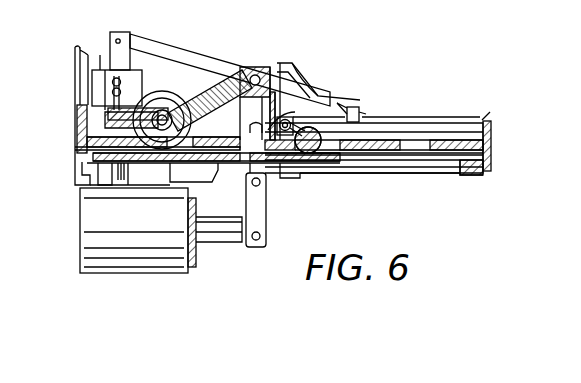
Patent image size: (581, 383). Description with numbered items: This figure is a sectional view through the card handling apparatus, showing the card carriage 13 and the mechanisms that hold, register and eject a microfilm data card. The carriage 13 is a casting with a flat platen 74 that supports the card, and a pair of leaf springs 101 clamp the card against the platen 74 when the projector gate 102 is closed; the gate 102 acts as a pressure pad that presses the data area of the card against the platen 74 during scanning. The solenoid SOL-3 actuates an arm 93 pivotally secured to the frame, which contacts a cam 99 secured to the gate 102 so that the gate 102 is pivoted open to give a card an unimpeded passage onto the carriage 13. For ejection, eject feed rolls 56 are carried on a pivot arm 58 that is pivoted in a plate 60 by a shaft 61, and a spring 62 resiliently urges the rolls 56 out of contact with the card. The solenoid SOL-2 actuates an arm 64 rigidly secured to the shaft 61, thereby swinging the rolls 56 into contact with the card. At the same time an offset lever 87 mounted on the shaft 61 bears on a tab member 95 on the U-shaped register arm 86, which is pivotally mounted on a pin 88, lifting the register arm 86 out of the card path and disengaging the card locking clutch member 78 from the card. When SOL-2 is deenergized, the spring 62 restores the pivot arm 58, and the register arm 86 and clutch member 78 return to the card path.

The solenoid SOL-2 is at (100, 55).
The solenoid SOL-3 is at (131, 273).
The spring 62 is at (88, 83).
The arm 64 is at (166, 32).
The shaft 61 is at (250, 67).
The plate 60 is at (286, 46).
The offset lever 87 is at (312, 50).
The pin 88 is at (318, 102).
The tab member 95 is at (356, 106).
The card locking clutch member 78 is at (366, 118).
The platen 74 is at (443, 142).
The card carriage 13 is at (490, 116).
The register arm 86 is at (491, 130).
The projector gate 102 is at (470, 176).
The leaf springs 101 is at (353, 177).
The cam 99 is at (308, 178).
The arm 93 is at (270, 205).
The eject feed rolls 56 is at (190, 125).
The pivot arm 58 is at (189, 95).